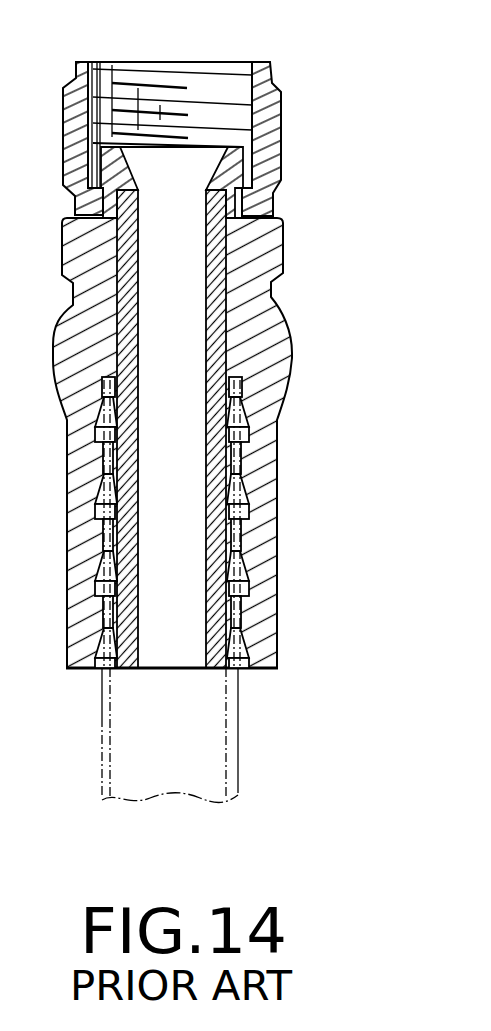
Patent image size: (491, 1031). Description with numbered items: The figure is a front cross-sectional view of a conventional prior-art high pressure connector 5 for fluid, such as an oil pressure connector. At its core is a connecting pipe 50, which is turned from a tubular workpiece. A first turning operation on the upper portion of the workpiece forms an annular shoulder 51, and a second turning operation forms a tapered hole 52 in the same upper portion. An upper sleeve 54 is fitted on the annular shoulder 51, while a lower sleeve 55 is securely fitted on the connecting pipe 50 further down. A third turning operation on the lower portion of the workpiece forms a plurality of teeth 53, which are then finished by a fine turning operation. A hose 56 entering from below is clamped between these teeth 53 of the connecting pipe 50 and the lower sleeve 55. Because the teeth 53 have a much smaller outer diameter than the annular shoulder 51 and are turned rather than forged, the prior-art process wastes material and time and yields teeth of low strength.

The high pressure connector 5 is at (327, 312).
The connecting pipe 50 is at (222, 275).
The annular shoulder 51 is at (255, 172).
The tapered hole 52 is at (222, 168).
The teeth 53 is at (217, 513).
The upper sleeve 54 is at (265, 127).
The lower sleeve 55 is at (278, 350).
The hose 56 is at (230, 725).